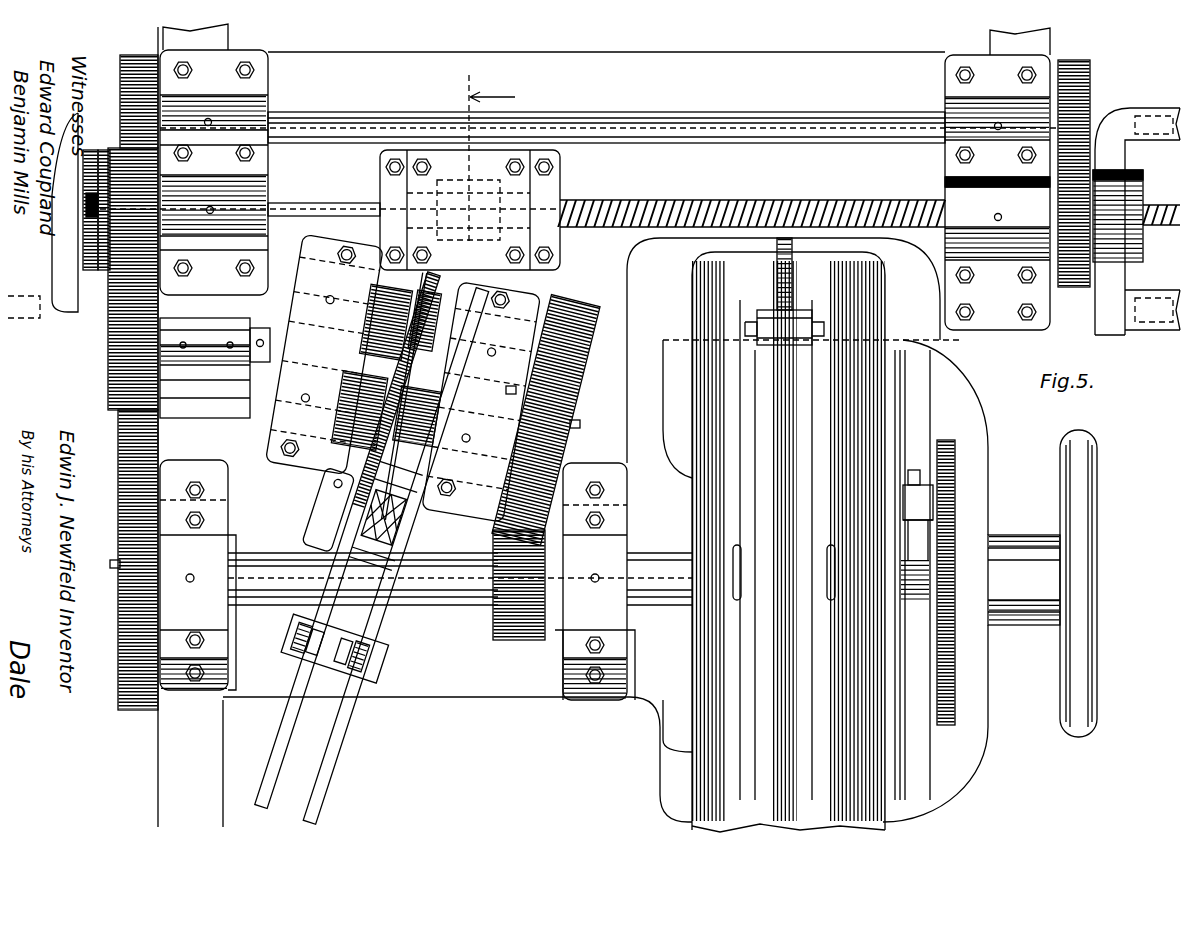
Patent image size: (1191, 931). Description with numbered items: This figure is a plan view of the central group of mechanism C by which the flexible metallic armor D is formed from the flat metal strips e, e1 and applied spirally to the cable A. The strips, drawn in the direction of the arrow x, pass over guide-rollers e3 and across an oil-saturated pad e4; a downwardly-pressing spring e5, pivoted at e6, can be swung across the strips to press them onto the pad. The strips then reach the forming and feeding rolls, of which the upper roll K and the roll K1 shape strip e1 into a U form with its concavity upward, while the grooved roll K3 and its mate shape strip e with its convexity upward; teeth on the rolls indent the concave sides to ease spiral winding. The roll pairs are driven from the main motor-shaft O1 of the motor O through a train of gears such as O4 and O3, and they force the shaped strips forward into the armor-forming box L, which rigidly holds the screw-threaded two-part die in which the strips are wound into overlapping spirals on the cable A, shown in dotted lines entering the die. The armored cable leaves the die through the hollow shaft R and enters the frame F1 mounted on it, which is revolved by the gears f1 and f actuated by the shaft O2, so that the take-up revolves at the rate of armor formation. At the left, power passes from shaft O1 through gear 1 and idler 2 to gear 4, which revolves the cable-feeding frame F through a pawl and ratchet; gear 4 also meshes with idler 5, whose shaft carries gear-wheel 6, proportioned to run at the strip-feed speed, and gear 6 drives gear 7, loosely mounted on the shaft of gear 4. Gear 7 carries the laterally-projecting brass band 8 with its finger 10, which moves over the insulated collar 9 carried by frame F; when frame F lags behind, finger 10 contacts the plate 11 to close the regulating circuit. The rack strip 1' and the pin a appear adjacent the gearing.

The pin a is at (106, 55).
The gear 1 is at (103, 559).
The rack strip 1' is at (484, 267).
The idler gear 2 is at (121, 382).
The gear 4 is at (100, 72).
The idler gear 5 is at (150, 292).
The gear-wheel 6 is at (91, 376).
The gear 7 is at (112, 127).
The metal band 8 is at (91, 192).
The insulated collar 9 is at (96, 290).
The metal finger 10 is at (86, 200).
The contact plate 11 is at (283, 149).
The cable A is at (320, 206).
The central group of mechanism C is at (774, 530).
The flexible metallic armor D is at (684, 208).
The cable-feeding frame F is at (43, 215).
The frame F1 is at (1137, 221).
The gear f is at (1071, 305).
The gear f1 is at (1090, 90).
The forming and feeding roll K is at (341, 357).
The forming and feeding roll K1 is at (461, 405).
The forming and feeding roll K3 is at (440, 256).
The armor-forming box L is at (470, 210).
The motor O is at (788, 535).
The main motor-shaft O1 is at (460, 579).
The shaft O2 is at (610, 110).
The gear O3 is at (572, 386).
The gear O4 is at (501, 595).
The hollow shaft R is at (1140, 180).
The metal strip e is at (338, 537).
The metal strip e1 is at (405, 559).
The guide-roller e3 is at (326, 663).
The pad e4 is at (404, 521).
The spring e5 is at (310, 503).
The pivot e6 is at (319, 467).
The arrow x is at (294, 786).